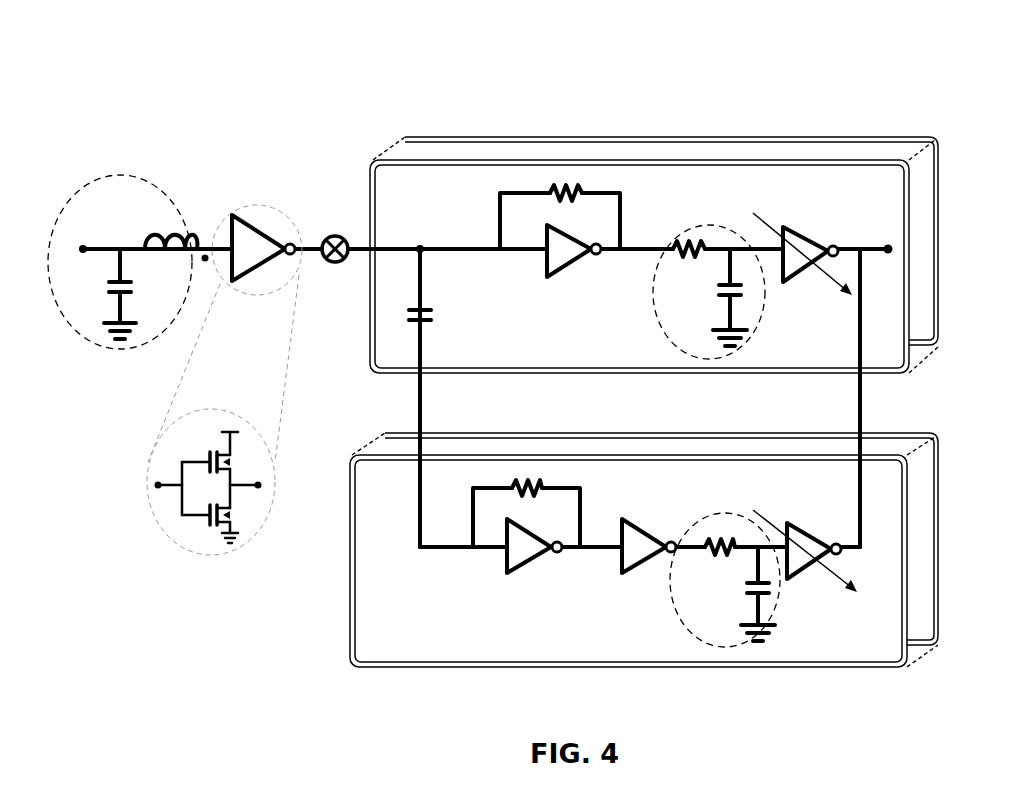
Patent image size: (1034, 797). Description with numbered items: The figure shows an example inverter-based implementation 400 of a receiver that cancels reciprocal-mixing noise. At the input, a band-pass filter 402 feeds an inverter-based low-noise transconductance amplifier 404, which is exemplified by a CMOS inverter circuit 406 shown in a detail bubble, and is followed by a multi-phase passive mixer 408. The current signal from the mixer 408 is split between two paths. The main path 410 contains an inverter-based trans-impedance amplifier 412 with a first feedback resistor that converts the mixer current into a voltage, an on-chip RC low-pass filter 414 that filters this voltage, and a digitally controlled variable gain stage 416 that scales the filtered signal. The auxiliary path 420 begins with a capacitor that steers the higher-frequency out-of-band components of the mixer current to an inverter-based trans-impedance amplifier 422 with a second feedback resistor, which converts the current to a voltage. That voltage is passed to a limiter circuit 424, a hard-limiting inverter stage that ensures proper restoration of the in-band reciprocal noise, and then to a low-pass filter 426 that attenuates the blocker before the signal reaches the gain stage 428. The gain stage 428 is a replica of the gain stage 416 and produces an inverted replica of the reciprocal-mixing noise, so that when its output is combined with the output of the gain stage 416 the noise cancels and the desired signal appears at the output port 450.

The inverter-based implementation 400 is at (910, 78).
The band-pass filter 402 is at (148, 180).
The inverter-based low-noise transconductance amplifier 404 is at (265, 207).
The CMOS inverter circuit 406 is at (217, 408).
The multi-phase passive mixer 408 is at (322, 270).
The main path 410 is at (654, 255).
The inverter-based trans-impedance amplifier 412 is at (540, 258).
The low-pass filter 414 is at (733, 230).
The variable gain stage 416 is at (811, 270).
The auxiliary path 420 is at (644, 550).
The inverter-based trans-impedance amplifier 422 is at (505, 557).
The limiter circuit 424 is at (618, 557).
The low-pass filter 426 is at (750, 517).
The gain stage 428 is at (818, 568).
The output port 450 is at (885, 240).